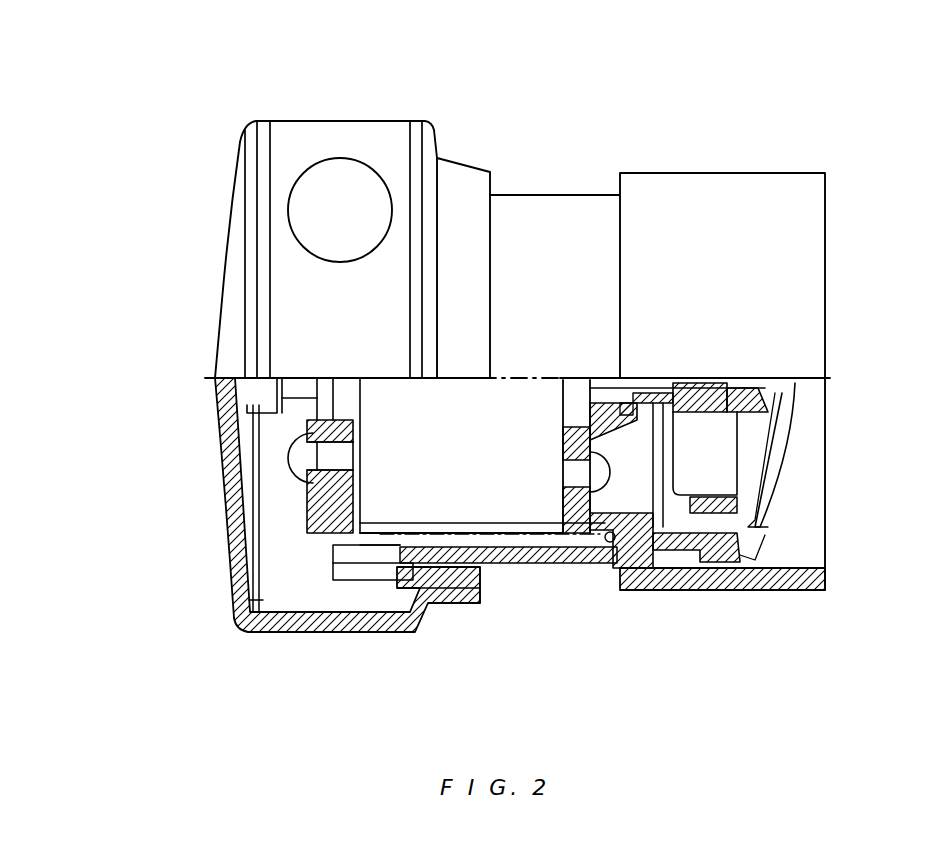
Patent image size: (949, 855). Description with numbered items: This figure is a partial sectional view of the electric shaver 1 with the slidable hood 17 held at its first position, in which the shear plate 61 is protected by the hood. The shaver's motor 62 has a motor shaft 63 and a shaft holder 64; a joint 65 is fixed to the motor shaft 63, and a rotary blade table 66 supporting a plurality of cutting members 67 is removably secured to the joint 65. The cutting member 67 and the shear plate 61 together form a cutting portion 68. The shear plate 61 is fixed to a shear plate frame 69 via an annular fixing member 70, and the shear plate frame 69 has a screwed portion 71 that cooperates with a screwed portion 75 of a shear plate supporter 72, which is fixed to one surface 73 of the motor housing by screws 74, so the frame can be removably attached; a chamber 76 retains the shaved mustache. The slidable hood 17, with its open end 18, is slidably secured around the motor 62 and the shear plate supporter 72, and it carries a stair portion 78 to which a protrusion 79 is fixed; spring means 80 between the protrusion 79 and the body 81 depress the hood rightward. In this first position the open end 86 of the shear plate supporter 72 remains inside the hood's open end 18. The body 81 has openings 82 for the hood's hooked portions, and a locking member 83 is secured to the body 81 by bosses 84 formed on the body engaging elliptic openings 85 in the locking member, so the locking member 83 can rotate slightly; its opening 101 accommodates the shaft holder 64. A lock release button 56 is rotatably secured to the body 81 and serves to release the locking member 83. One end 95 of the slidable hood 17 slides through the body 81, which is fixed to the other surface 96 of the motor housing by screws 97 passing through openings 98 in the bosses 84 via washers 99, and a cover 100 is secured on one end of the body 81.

The electric shaver 1 is at (218, 152).
The lock release button 56 is at (392, 138).
The shear plate 61 is at (787, 468).
The motor 62 is at (500, 512).
The motor shaft 63 is at (670, 386).
The shaft holder 64 is at (273, 393).
The joint 65 is at (720, 392).
The rotary blade table 66 is at (737, 497).
The cutting member 67 is at (793, 413).
The cutting portion 68 is at (688, 523).
The shear plate frame 69 is at (744, 560).
The annular fixing member 70 is at (780, 590).
The screwed portion 71 is at (698, 560).
The shear plate supporter 72 is at (634, 552).
The one surface of motor housing 73 is at (566, 500).
The screws 74 is at (588, 517).
The screwed portion 75 is at (676, 550).
The chamber 76 is at (745, 534).
The stair portion 78 is at (597, 510).
The protrusion 79 is at (607, 545).
The spring means 80 is at (518, 550).
The body 81 is at (396, 627).
The openings 82 is at (340, 553).
The locking member 83 is at (237, 600).
The bosses 84 is at (256, 527).
The elliptic openings 85 is at (250, 560).
The open end of shear plate supporter 86 is at (710, 560).
The one end of slidable hood 95 is at (438, 595).
The other surface of motor housing 96 is at (355, 540).
The screws 97 is at (303, 487).
The openings 98 is at (322, 493).
The washers 99 is at (296, 454).
The cover 100 is at (213, 384).
The opening 101 is at (305, 425).
The slidable hood 17 is at (722, 568).
The open end of slidable hood 18 is at (820, 582).